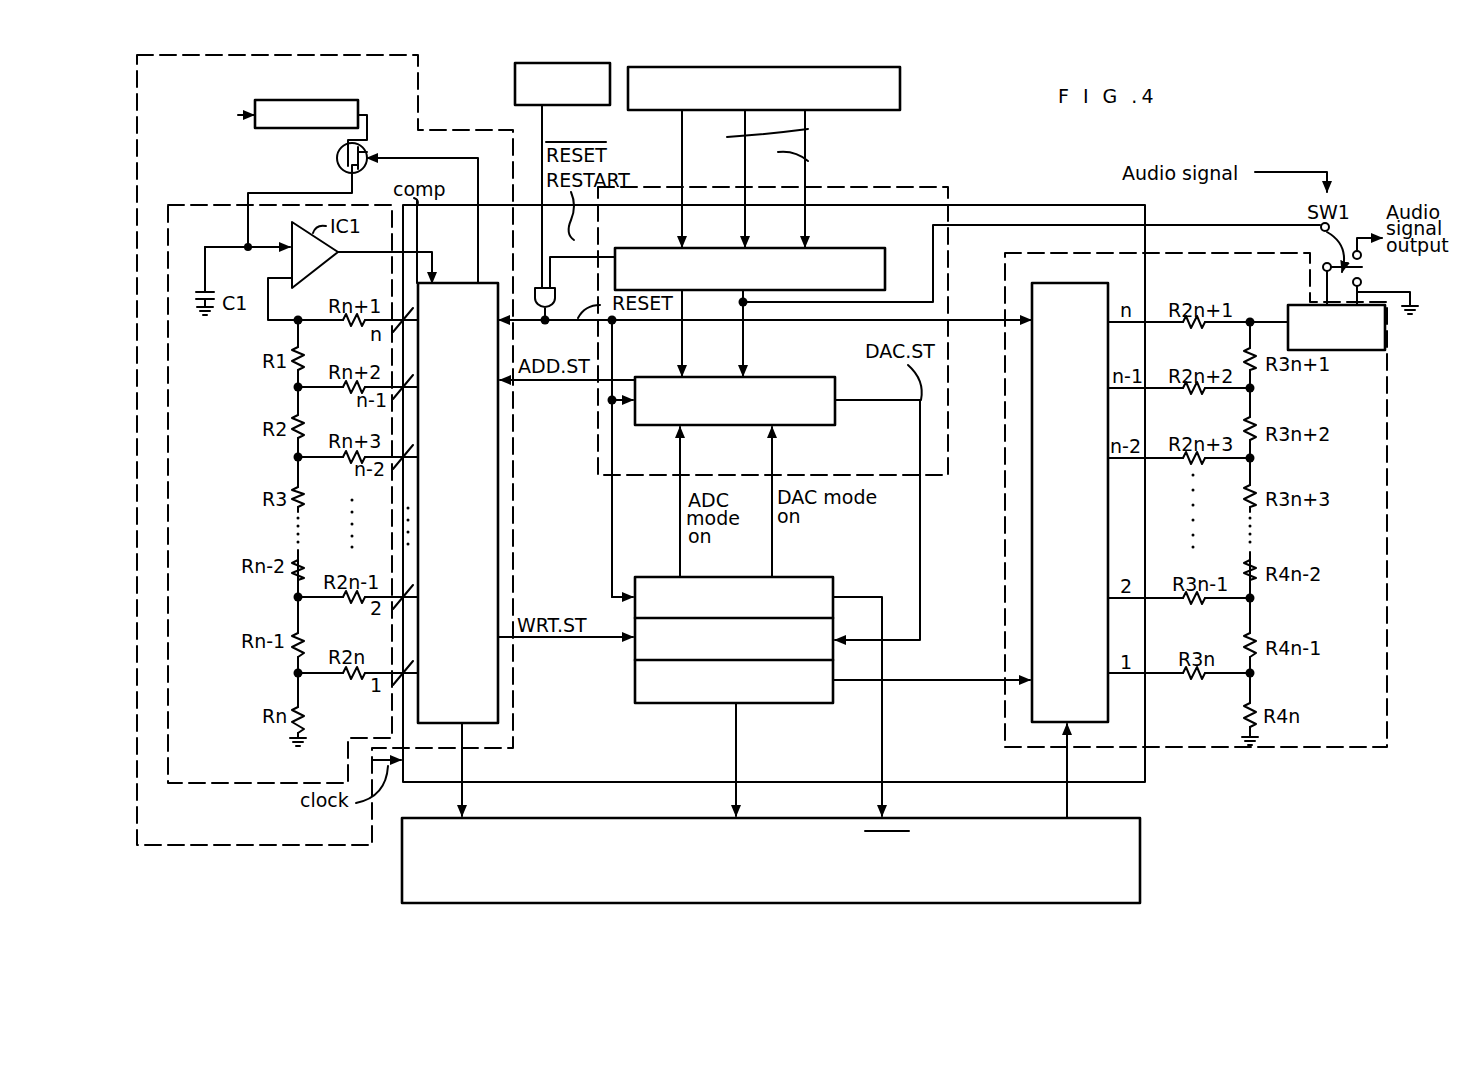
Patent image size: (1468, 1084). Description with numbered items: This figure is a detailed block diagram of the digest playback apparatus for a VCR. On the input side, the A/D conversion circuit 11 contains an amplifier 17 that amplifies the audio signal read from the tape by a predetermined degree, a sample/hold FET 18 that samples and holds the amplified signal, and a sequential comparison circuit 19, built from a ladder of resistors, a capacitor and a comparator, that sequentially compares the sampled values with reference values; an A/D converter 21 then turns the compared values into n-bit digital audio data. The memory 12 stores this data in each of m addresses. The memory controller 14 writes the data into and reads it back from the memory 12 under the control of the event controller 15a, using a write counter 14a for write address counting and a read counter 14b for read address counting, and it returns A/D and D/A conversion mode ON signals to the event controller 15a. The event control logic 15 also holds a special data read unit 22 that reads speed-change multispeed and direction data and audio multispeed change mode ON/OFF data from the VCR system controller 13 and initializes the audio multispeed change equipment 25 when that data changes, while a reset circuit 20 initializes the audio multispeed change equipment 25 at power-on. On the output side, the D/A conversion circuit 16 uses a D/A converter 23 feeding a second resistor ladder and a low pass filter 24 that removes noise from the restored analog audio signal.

The A/D conversion circuit 11 is at (408, 56).
The memory 12 is at (1140, 860).
The VCR system controller 13 is at (900, 88).
The memory controller 14 is at (721, 616).
The write counter 14a is at (635, 647).
The read counter 14b is at (634, 686).
The event control logic 15 is at (908, 193).
The event controller 15a is at (836, 383).
The D/A conversion circuit 16 is at (1387, 725).
The amplifier 17 is at (297, 100).
The sample/hold FET 18 is at (366, 150).
The sequential comparison circuit 19 is at (253, 783).
The reset circuit 20 is at (515, 75).
The A/D converter 21 is at (490, 688).
The special data read unit 22 is at (886, 268).
The D/A converter 23 is at (1034, 398).
The low pass filter 24 is at (1360, 352).
The audio multispeed change equipment 25 is at (1012, 209).